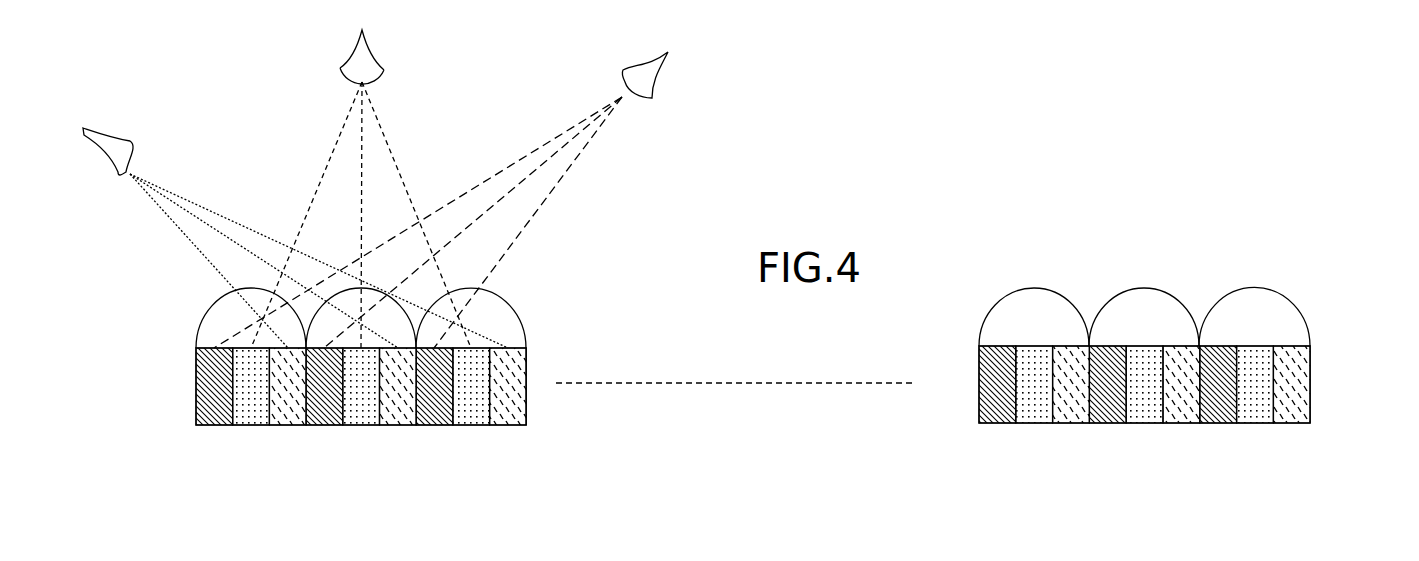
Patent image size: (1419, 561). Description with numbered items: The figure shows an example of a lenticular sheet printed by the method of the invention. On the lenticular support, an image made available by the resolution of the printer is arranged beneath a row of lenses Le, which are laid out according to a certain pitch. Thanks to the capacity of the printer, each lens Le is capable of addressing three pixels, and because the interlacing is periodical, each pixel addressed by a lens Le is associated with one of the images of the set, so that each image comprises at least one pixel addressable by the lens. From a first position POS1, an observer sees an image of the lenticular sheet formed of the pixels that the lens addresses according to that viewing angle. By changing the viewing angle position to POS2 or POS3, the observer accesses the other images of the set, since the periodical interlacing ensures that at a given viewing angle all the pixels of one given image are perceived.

The first position POS1 is at (670, 78).
The second viewing angle position POS2 is at (390, 54).
The third viewing angle position POS3 is at (112, 130).
The lens Le is at (212, 338).